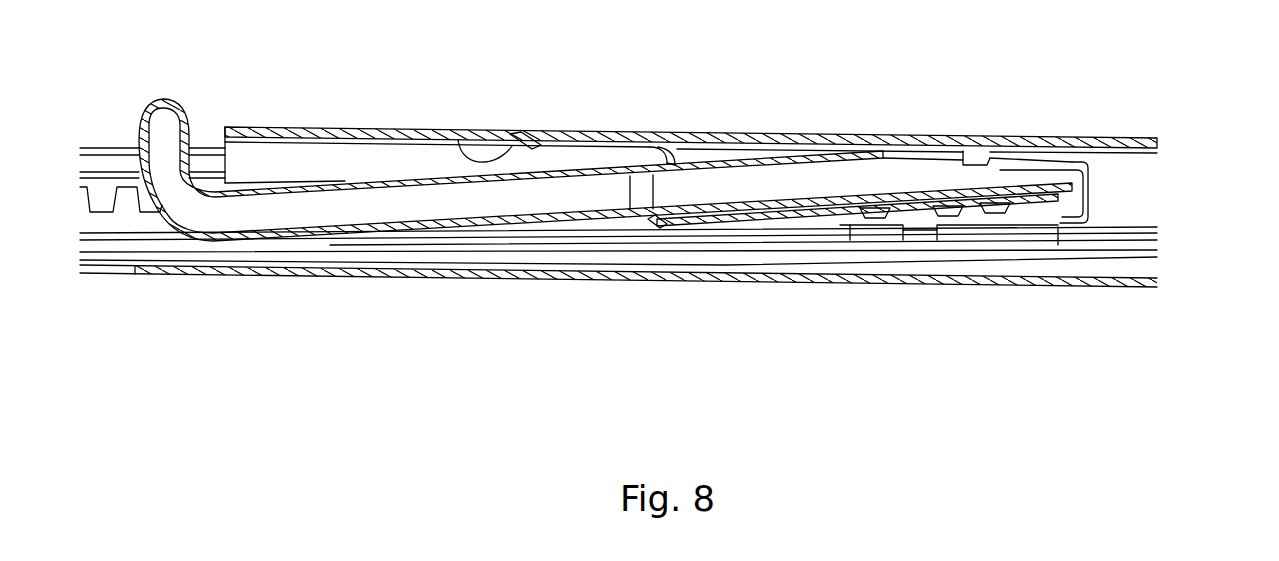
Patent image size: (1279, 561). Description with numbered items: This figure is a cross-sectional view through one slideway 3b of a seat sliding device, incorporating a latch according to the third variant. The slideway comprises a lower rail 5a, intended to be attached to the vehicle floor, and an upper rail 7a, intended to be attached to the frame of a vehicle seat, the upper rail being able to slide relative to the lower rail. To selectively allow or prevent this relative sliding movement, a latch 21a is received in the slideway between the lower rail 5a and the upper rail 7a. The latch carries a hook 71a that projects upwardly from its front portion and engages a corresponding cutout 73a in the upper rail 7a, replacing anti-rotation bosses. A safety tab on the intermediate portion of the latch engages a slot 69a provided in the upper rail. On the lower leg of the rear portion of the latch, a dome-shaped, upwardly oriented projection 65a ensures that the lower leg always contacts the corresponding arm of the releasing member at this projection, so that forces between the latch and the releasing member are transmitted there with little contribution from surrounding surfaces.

The slideway 3b is at (209, 310).
The lower rail 5a is at (1045, 280).
The upper rail 7a is at (787, 133).
The cutout 73a is at (459, 131).
The hook 71a is at (527, 131).
The latch 21a is at (1075, 163).
The slot 69a is at (1088, 213).
The dome-shaped projection 65a is at (1017, 197).